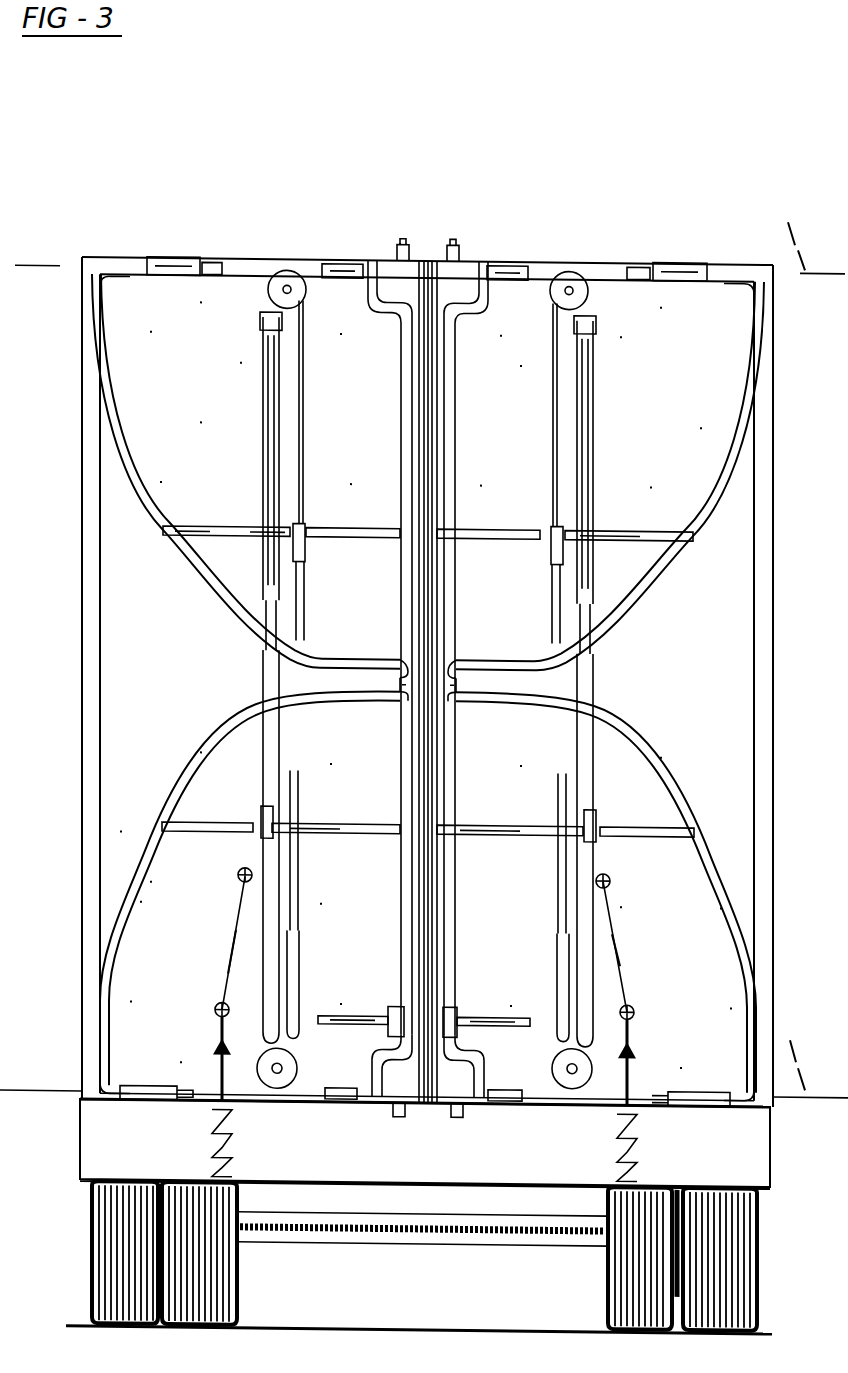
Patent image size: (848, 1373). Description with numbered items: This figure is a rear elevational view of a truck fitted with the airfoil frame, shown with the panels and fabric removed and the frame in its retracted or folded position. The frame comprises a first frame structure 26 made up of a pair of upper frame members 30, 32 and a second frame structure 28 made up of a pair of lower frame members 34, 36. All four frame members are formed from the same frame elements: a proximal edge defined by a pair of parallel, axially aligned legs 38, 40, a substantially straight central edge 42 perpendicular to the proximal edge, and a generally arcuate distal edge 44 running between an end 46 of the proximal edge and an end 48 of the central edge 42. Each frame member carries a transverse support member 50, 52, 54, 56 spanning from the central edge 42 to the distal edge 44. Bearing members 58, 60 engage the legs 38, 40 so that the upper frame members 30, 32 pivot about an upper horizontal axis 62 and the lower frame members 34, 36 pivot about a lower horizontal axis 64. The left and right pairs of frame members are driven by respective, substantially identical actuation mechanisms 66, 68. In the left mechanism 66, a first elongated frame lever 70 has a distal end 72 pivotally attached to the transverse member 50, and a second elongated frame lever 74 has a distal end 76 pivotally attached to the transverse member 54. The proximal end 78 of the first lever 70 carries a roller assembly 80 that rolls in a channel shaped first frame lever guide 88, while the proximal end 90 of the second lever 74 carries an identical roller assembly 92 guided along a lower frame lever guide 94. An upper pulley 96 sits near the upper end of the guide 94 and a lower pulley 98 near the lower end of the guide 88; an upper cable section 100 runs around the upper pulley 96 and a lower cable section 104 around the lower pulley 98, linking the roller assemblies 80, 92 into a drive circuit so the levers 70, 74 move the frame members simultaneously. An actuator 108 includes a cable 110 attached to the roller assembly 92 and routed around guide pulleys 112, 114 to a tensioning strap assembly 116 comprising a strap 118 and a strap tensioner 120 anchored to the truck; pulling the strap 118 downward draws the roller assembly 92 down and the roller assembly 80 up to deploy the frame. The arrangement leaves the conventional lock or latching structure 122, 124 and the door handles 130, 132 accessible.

The first frame structure 26 is at (172, 611).
The second frame structure 28 is at (145, 834).
The upper frame member 30 is at (145, 520).
The upper frame member 32 is at (742, 475).
The lower frame member 34 is at (138, 890).
The lower frame member 36 is at (675, 805).
The leg 38 is at (212, 260).
The leg 40 is at (403, 258).
The central edge 42 is at (404, 407).
The distal edge 44 is at (103, 476).
The end of proximal edge 46 is at (88, 260).
The end of central edge 48 is at (398, 665).
The transverse support member 50 is at (240, 525).
The transverse support member 52 is at (475, 525).
The transverse support member 54 is at (340, 831).
The transverse support member 56 is at (500, 831).
The bearing member 58 is at (175, 257).
The bearing member 60 is at (345, 259).
The upper horizontal axis 62 is at (779, 232).
The lower horizontal axis 64 is at (792, 1054).
The actuation mechanism 66 is at (258, 691).
The actuation mechanism 68 is at (594, 679).
The first elongated frame lever 70 is at (300, 757).
The distal end of first frame lever 72 is at (305, 545).
The second elongated frame lever 74 is at (270, 609).
The distal end of second frame lever 76 is at (260, 818).
The proximal end of first frame lever 78 is at (300, 993).
The roller assembly 80 is at (375, 1021).
The first frame lever guide 88 is at (282, 923).
The proximal end of second frame lever 90 is at (268, 371).
The roller assembly 92 is at (262, 320).
The lower frame lever guide 94 is at (268, 414).
The upper pulley 96 is at (288, 268).
The lower pulley 98 is at (280, 1088).
The upper cable section 100 is at (305, 467).
The lower cable section 104 is at (236, 981).
The actuator 108 is at (212, 1034).
The cable 110 is at (234, 933).
The guide pulley 112 is at (238, 872).
The guide pulley 114 is at (215, 1009).
The tensioning strap assembly 116 is at (215, 1091).
The strap 118 is at (216, 1057).
The strap tensioner 120 is at (236, 1132).
The lock or latching structure 122 is at (395, 1003).
The lock or latching structure 124 is at (455, 1005).
The handle 130 is at (372, 1056).
The handle 132 is at (484, 1022).